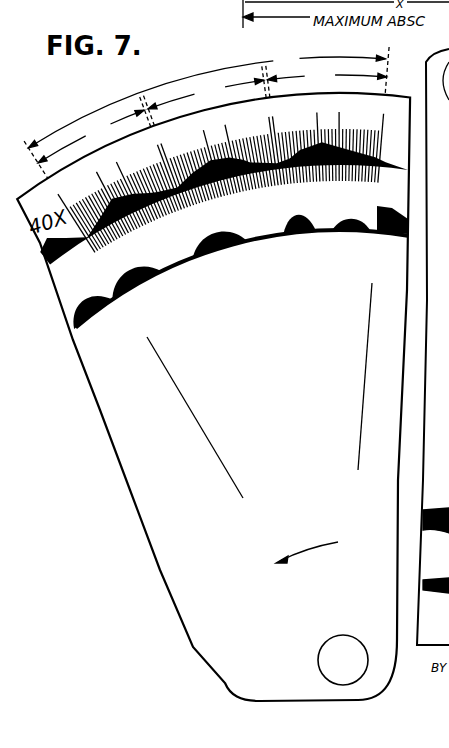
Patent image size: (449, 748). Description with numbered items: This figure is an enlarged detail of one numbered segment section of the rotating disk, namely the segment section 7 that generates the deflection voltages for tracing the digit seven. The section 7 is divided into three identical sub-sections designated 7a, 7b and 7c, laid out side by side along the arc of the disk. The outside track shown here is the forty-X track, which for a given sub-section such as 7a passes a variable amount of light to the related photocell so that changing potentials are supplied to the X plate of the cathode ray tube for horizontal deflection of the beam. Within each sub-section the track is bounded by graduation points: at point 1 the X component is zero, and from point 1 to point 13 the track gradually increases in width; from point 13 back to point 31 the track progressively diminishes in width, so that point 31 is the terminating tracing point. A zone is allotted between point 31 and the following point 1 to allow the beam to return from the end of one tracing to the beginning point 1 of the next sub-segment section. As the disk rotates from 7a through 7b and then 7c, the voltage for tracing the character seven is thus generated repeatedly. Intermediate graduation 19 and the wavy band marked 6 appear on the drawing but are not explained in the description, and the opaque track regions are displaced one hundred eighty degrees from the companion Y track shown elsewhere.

The point 1 is at (166, 176).
The point 13 is at (204, 165).
The scale graduation mark 19 is at (225, 161).
The point 31 is at (264, 153).
The profile irregularities (wavy band) 6 is at (240, 267).
The segment section 7 is at (206, 112).
The sub-section 7a is at (94, 130).
The sub-section 7b is at (205, 95).
The sub-section 7c is at (326, 82).